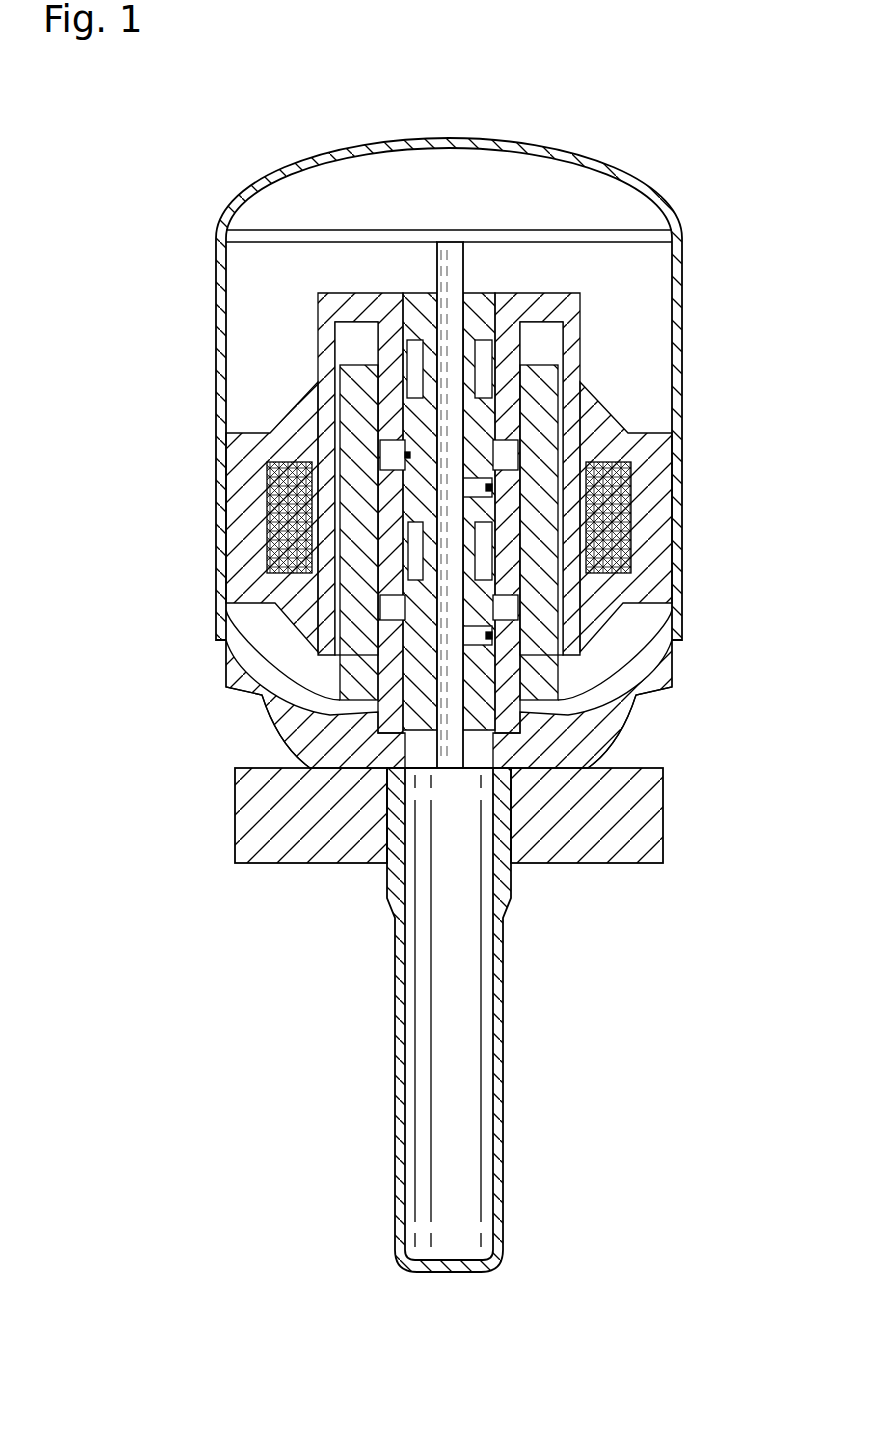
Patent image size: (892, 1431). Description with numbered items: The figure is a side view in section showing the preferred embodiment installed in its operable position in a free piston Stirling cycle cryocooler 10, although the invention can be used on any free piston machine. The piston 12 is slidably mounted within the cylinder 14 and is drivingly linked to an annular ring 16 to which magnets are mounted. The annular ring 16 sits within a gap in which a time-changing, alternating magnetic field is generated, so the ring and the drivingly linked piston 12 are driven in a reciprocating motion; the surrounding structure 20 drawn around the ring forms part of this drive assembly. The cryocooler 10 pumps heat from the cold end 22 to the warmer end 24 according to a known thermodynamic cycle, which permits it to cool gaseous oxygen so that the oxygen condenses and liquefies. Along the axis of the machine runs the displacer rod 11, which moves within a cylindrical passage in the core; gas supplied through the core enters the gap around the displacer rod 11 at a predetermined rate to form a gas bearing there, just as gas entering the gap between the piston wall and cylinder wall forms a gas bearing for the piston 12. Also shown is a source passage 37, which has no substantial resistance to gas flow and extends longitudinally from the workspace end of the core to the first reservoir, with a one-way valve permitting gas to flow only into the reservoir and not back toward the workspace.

The free piston Stirling cycle cryocooler 10 is at (134, 548).
The displacer rod 11 is at (450, 748).
The piston 12 is at (403, 284).
The cylinder 14 is at (515, 712).
The annular ring 16 is at (330, 338).
The stator coil 20 is at (228, 497).
The cold end 22 is at (342, 1252).
The warmer end 24 is at (180, 817).
The source passage 37 is at (395, 708).